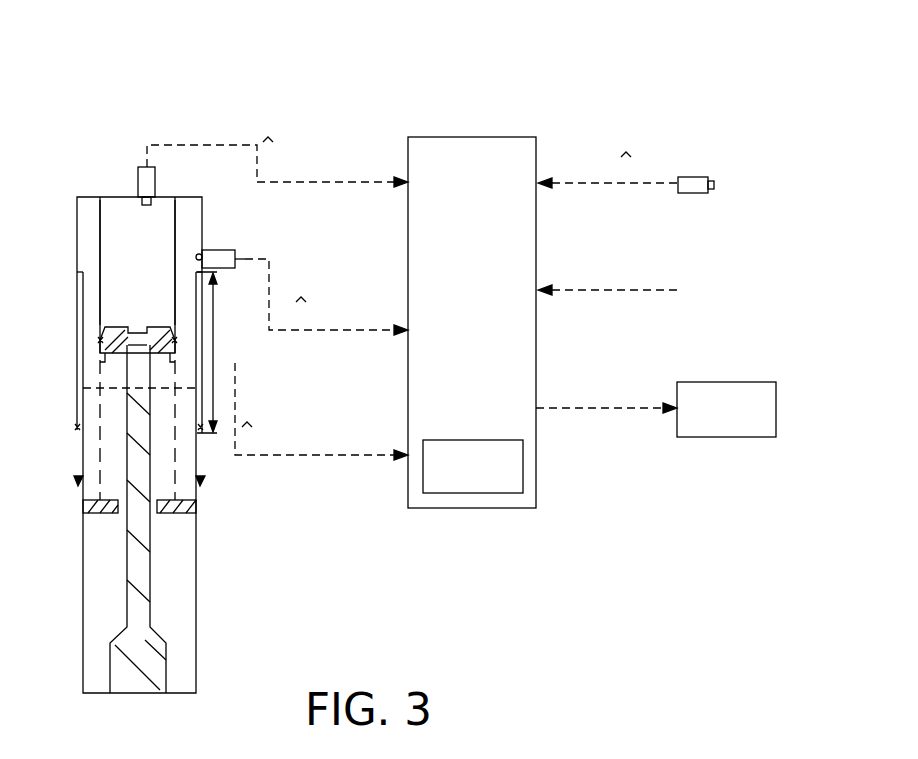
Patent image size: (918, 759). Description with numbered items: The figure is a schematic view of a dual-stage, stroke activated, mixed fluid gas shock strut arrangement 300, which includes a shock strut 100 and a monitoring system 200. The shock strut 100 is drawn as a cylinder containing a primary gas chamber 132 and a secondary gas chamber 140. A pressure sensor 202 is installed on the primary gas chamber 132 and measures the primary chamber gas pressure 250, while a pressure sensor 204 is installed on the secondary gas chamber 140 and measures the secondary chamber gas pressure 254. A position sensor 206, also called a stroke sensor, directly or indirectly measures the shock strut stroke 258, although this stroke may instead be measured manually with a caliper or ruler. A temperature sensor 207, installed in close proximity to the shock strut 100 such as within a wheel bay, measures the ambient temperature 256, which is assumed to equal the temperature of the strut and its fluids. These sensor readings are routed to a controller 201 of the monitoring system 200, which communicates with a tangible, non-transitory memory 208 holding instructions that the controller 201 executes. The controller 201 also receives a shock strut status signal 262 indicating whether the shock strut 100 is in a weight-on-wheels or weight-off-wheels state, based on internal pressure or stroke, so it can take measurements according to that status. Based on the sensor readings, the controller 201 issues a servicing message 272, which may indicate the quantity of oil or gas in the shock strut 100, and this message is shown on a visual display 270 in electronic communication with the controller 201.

The shock strut 100 is at (105, 190).
The secondary gas chamber 140 is at (154, 249).
The primary gas chamber 132 is at (88, 366).
The pressure sensor 204 is at (147, 163).
The pressure sensor 202 is at (220, 249).
The position sensor 206 is at (215, 366).
The secondary chamber gas pressure 254 is at (403, 184).
The primary chamber gas pressure 250 is at (383, 328).
The shock strut stroke 258 is at (292, 458).
The shock strut arrangement 300 is at (320, 76).
The monitoring system 200 is at (530, 76).
The controller 201 is at (465, 150).
The tangible, non-transitory memory 208 is at (523, 470).
The ambient temperature 256 is at (549, 181).
The temperature sensor 207 is at (691, 176).
The shock strut status signal 262 is at (549, 288).
The servicing message 272 is at (606, 406).
The visual display 270 is at (737, 382).